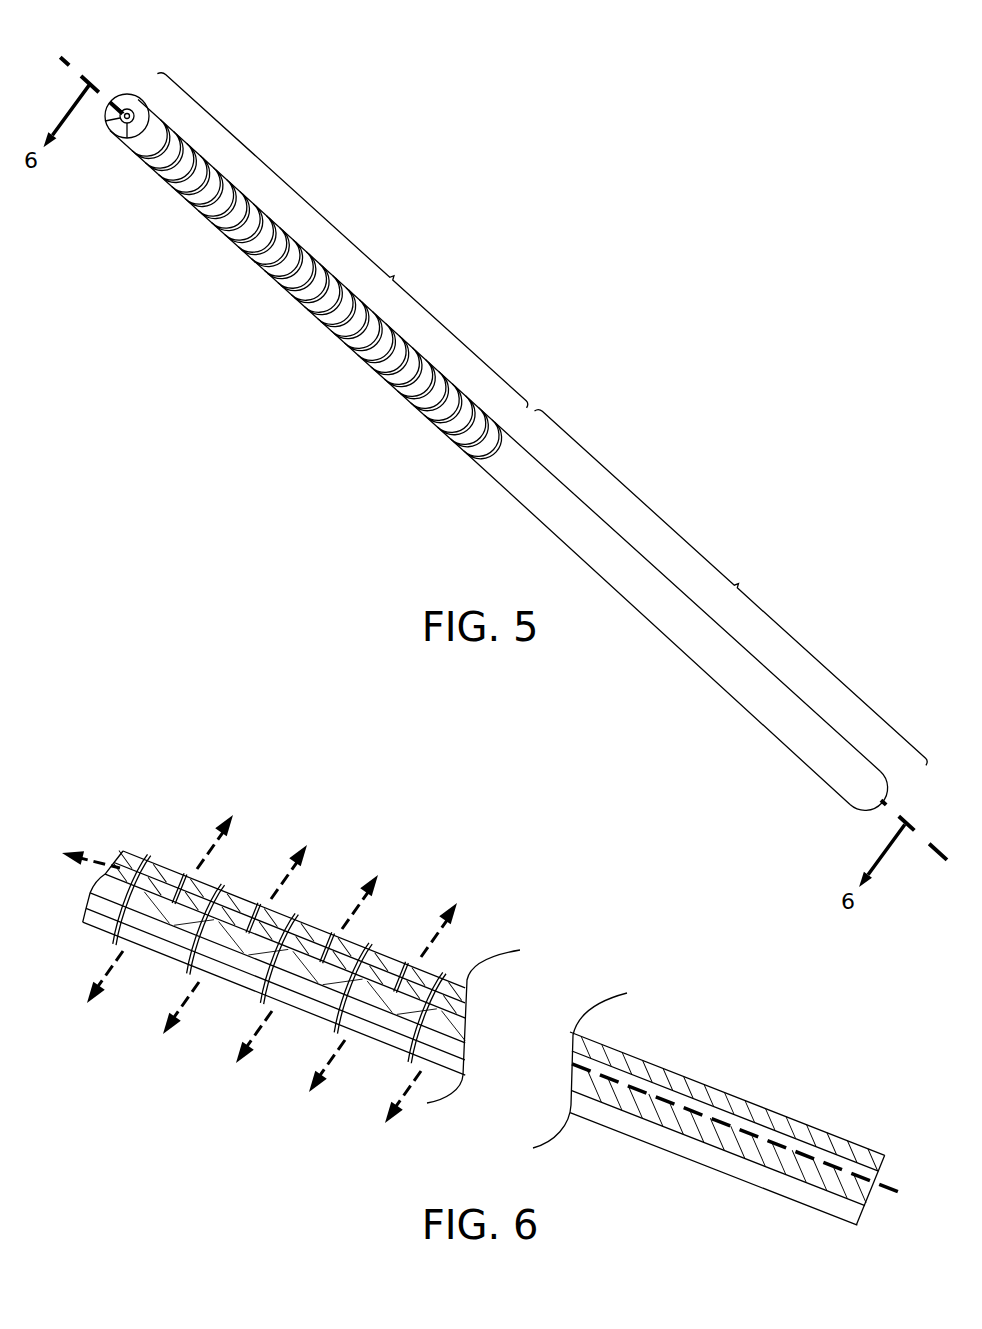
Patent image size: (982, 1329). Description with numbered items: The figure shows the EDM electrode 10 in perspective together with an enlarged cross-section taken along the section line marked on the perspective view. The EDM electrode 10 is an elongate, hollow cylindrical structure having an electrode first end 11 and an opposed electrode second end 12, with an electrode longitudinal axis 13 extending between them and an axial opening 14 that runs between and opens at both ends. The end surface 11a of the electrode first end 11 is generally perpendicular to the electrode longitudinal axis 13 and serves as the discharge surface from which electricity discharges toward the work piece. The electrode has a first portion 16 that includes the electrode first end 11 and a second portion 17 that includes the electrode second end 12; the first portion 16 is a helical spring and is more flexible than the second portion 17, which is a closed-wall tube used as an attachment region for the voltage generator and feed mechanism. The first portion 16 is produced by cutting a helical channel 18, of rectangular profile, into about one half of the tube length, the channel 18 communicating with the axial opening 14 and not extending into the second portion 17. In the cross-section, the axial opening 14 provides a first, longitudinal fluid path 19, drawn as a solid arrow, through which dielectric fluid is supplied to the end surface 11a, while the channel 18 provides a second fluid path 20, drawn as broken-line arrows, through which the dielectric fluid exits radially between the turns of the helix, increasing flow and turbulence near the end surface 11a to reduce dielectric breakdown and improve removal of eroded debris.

In FIG. 5, the EDM electrode 10 is at (526, 249).
In FIG. 6, the EDM electrode 10 is at (686, 994).
In FIG. 5, the electrode first end 11 is at (115, 140).
In FIG. 6, the electrode first end 11 is at (86, 914).
In FIG. 5, the end surface 11a is at (127, 102).
In FIG. 6, the end surface 11a is at (116, 868).
In FIG. 5, the electrode second end 12 is at (851, 809).
In FIG. 6, the electrode second end 12 is at (858, 1228).
In FIG. 5, the electrode longitudinal axis 13 is at (71, 56).
In FIG. 5, the axial opening 14 is at (135, 112).
In FIG. 6, the axial opening 14 is at (588, 1047).
In FIG. 5, the first portion 16 is at (397, 272).
In FIG. 6, the first portion 16 is at (360, 947).
In FIG. 5, the second portion 17 is at (740, 582).
In FIG. 6, the second portion 17 is at (735, 1097).
In FIG. 5, the helical channel 18 is at (325, 307).
In FIG. 6, the helical channel 18 is at (373, 1034).
In FIG. 6, the longitudinal fluid path 19 is at (221, 960).
In FIG. 6, the second fluid path 20 is at (407, 1070).